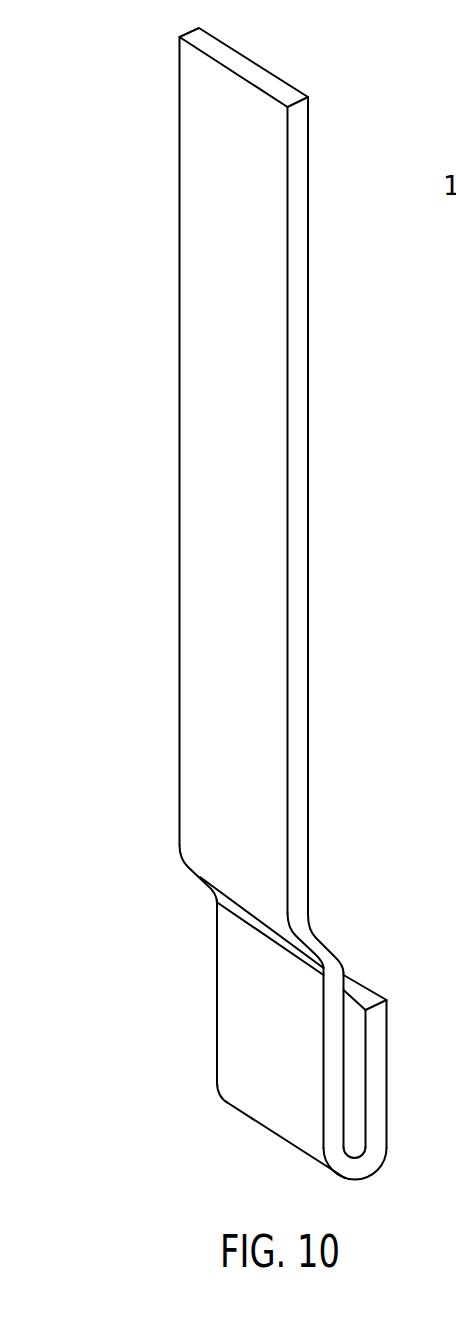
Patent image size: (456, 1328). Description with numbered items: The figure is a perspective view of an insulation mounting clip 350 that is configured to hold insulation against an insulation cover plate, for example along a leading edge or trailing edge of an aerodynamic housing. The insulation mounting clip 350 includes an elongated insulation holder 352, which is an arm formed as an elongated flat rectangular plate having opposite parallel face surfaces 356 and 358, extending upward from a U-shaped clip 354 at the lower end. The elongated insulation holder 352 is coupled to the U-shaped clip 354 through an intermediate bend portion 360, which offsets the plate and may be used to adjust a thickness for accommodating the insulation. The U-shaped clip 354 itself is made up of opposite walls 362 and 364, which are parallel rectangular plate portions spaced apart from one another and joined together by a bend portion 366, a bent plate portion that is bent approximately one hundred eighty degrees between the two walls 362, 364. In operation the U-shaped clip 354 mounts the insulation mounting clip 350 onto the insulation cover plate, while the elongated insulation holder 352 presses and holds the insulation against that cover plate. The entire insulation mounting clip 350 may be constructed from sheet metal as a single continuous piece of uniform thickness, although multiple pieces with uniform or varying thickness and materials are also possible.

The insulation mounting clip 350 is at (271, 622).
The elongated insulation holder 352 is at (207, 638).
The U-shaped clip 354 is at (386, 1095).
The face surface 356 is at (203, 496).
The face surface 358 is at (309, 505).
The intermediate bend portion 360 is at (236, 906).
The wall 362 is at (248, 1029).
The wall 364 is at (387, 1059).
The bend portion 366 is at (353, 1180).